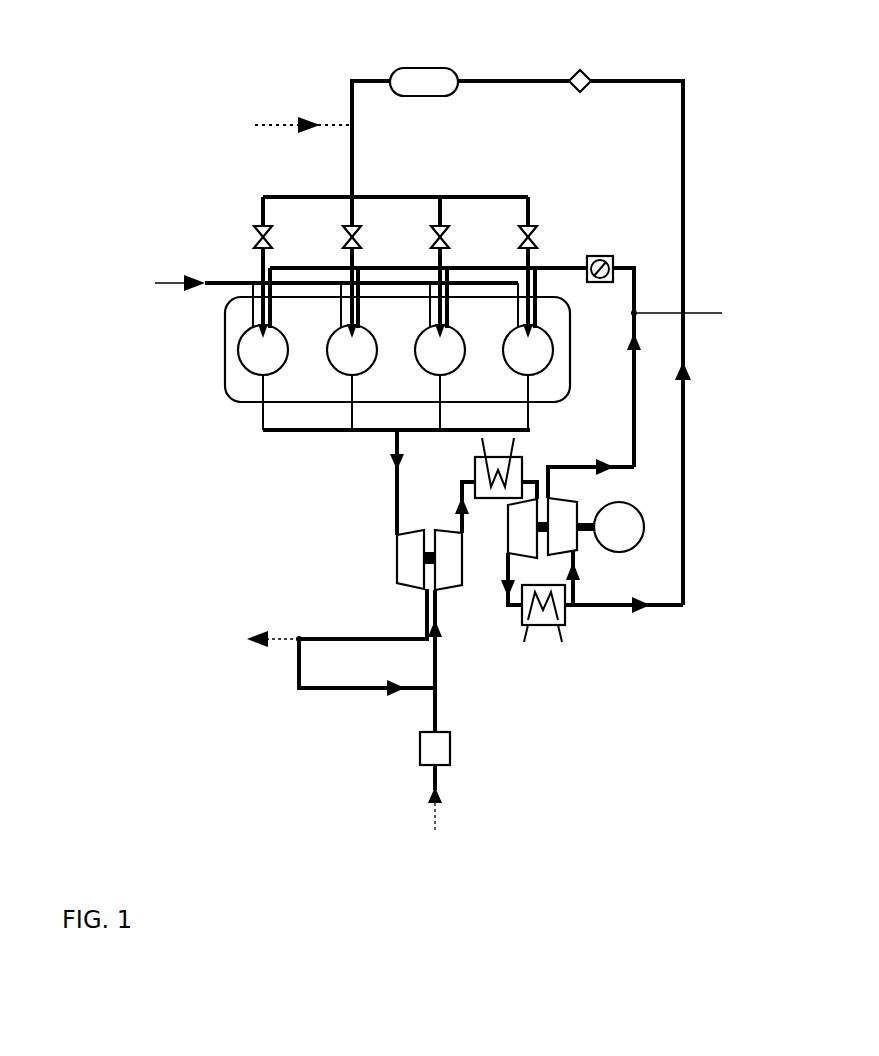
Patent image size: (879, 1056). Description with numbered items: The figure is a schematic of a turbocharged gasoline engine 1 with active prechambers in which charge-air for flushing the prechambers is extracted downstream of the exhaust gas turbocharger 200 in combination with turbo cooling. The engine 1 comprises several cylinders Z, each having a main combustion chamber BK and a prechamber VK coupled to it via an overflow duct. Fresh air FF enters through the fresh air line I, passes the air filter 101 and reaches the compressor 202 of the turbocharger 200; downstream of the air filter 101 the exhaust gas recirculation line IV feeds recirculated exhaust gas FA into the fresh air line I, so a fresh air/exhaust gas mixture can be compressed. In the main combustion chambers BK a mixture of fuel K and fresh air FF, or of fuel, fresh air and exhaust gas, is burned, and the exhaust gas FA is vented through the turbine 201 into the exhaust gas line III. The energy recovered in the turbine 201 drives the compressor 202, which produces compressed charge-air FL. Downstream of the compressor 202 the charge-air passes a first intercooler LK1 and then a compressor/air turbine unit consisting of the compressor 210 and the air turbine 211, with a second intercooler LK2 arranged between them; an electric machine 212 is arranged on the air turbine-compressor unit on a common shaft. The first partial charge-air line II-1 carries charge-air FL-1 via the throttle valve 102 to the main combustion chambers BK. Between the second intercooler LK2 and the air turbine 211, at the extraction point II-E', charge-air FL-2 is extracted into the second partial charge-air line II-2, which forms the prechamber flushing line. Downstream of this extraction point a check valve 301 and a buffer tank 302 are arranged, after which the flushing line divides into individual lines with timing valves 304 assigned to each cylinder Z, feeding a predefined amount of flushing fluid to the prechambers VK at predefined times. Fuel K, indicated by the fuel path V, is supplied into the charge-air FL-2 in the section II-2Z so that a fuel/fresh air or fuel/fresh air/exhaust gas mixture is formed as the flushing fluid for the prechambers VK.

The gasoline engine 1 is at (168, 352).
The air filter 101 is at (440, 748).
The throttle valve 102 is at (598, 255).
The exhaust gas turbocharger 200 is at (428, 518).
The turbine 201 is at (402, 576).
The compressor 202 is at (446, 546).
The compressor 210 is at (521, 538).
The air turbine 211 is at (568, 510).
The electric machine 212 is at (628, 537).
The check valve 301 is at (580, 72).
The buffer tank 302 is at (420, 78).
The timing valves 304 is at (348, 222).
The fuel K is at (327, 220).
The fuel path V is at (267, 123).
The cylinders Z is at (395, 377).
The prechamber VK is at (267, 333).
The main combustion chamber BK is at (279, 353).
The first intercooler LK1 is at (522, 465).
The second intercooler LK2 is at (540, 628).
The compressed charge-air FL is at (461, 480).
The charge-air FL-1 is at (706, 317).
The charge-air / flushing fluid FL-2 is at (686, 385).
The exhaust gas FA is at (256, 643).
The fresh air FF is at (440, 732).
The fresh air line I is at (438, 709).
The first partial charge-air line II-1 is at (634, 418).
The second partial charge-air line II-2 is at (461, 522).
The charge air section to fuel supply II-2Z is at (346, 102).
The extraction point II-E' is at (606, 669).
The exhaust gas line III is at (341, 637).
The exhaust gas recirculation line IV is at (325, 690).